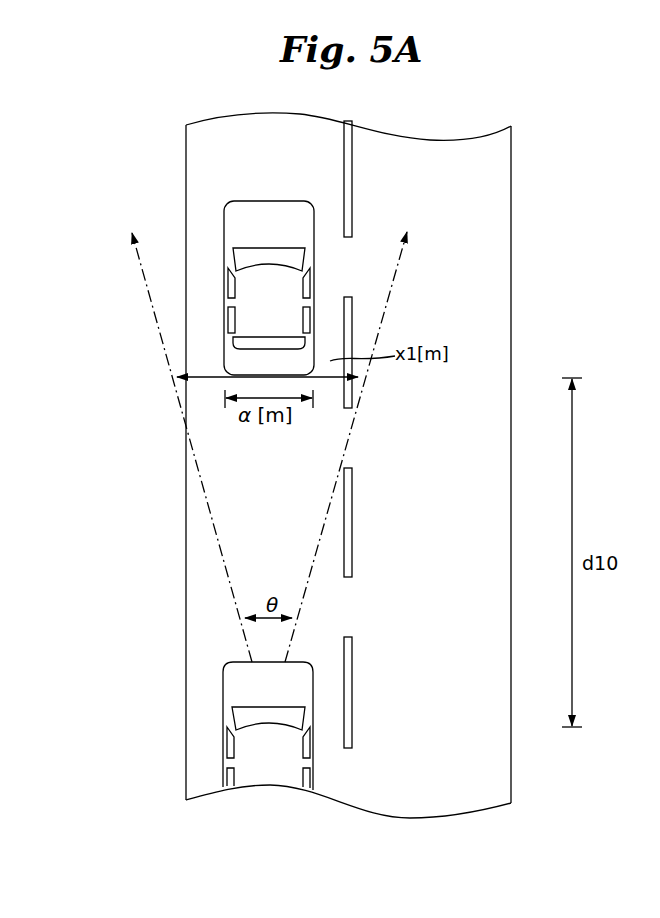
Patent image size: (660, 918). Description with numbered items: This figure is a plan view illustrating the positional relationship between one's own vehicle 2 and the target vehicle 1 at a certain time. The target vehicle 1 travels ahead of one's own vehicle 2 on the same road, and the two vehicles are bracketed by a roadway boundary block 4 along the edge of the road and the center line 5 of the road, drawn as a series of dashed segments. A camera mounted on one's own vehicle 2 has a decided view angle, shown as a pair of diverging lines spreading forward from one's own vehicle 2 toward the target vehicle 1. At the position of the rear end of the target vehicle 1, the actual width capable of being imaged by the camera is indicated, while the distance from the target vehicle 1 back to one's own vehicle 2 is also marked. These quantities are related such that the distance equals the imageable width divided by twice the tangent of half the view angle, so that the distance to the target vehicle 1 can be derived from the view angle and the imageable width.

The target vehicle 1 is at (278, 218).
The own vehicle 2 is at (268, 760).
The roadway boundary block 4 is at (186, 222).
The center line of the road 5 is at (352, 197).